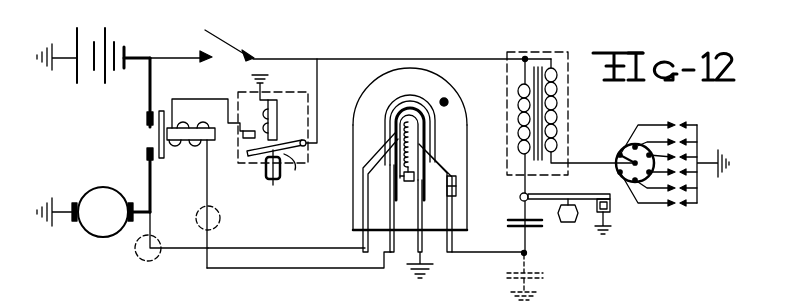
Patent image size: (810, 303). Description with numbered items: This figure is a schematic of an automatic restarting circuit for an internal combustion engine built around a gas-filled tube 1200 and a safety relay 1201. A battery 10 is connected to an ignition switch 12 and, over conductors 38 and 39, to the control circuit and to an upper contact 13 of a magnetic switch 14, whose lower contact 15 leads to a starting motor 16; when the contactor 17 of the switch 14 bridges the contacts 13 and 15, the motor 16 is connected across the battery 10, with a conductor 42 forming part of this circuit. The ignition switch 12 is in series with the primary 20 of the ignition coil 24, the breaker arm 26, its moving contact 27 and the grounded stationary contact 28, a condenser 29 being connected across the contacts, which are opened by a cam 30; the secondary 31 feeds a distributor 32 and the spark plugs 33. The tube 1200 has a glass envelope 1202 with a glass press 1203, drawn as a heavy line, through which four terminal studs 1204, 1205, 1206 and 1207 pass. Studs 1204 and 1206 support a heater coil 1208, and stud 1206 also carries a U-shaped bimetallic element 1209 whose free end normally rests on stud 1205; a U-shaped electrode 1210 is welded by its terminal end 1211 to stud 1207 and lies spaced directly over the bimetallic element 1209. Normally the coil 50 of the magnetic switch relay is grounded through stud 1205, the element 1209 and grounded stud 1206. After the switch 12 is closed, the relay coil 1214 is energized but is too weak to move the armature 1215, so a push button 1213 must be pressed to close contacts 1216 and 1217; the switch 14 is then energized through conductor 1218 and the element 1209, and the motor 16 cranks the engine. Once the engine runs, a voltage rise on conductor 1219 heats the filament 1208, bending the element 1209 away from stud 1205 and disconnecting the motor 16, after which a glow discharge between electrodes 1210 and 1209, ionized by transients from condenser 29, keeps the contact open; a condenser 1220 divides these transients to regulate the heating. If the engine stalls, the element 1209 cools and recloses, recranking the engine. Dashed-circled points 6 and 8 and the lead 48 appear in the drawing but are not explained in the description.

The terminal point 6 is at (157, 233).
The terminal point 8 is at (200, 208).
The battery 10 is at (92, 30).
The ignition switch 12 is at (248, 38).
The upper contact 13 is at (147, 114).
The magnetic switch 14 is at (142, 135).
The lower contact 15 is at (147, 156).
The starting motor 16 is at (112, 222).
The contactor 17 is at (191, 198).
The primary 20 is at (518, 93).
The ignition coil 24 is at (565, 52).
The breaker arm 26 is at (572, 194).
The moving contact 27 is at (612, 204).
The grounded stationary contact 28 is at (612, 212).
The condenser 29 is at (543, 226).
The cam 30 is at (571, 221).
The secondary 31 is at (558, 93).
The distributor 32 is at (620, 152).
The spark plugs 33 is at (682, 115).
The conductor 38 is at (190, 98).
The conductor 39 is at (187, 53).
The conductor 42 is at (153, 186).
The lead 48 is at (298, 58).
The relay coil 50 is at (185, 127).
The gas-filled tube 1200 is at (451, 68).
The safety relay 1201 is at (244, 92).
The glass envelope 1202 is at (375, 82).
The glass press 1203 is at (466, 233).
The terminal stud 1204 is at (363, 205).
The terminal stud 1205 is at (395, 254).
The terminal stud 1206 is at (424, 252).
The terminal stud 1207 is at (453, 218).
The heater coil 1208 is at (426, 150).
The U-shaped bimetallic element 1209 is at (410, 117).
The U-shaped electrode 1210 is at (402, 99).
The terminal end 1211 is at (456, 178).
The push button 1213 is at (268, 179).
The relay coil 1214 is at (281, 104).
The relay armature 1215 is at (310, 171).
The contact 1216 is at (243, 135).
The contact 1217 is at (247, 154).
The conductor 1218 is at (326, 268).
The conductor 1219 is at (276, 247).
The condenser 1220 is at (535, 278).